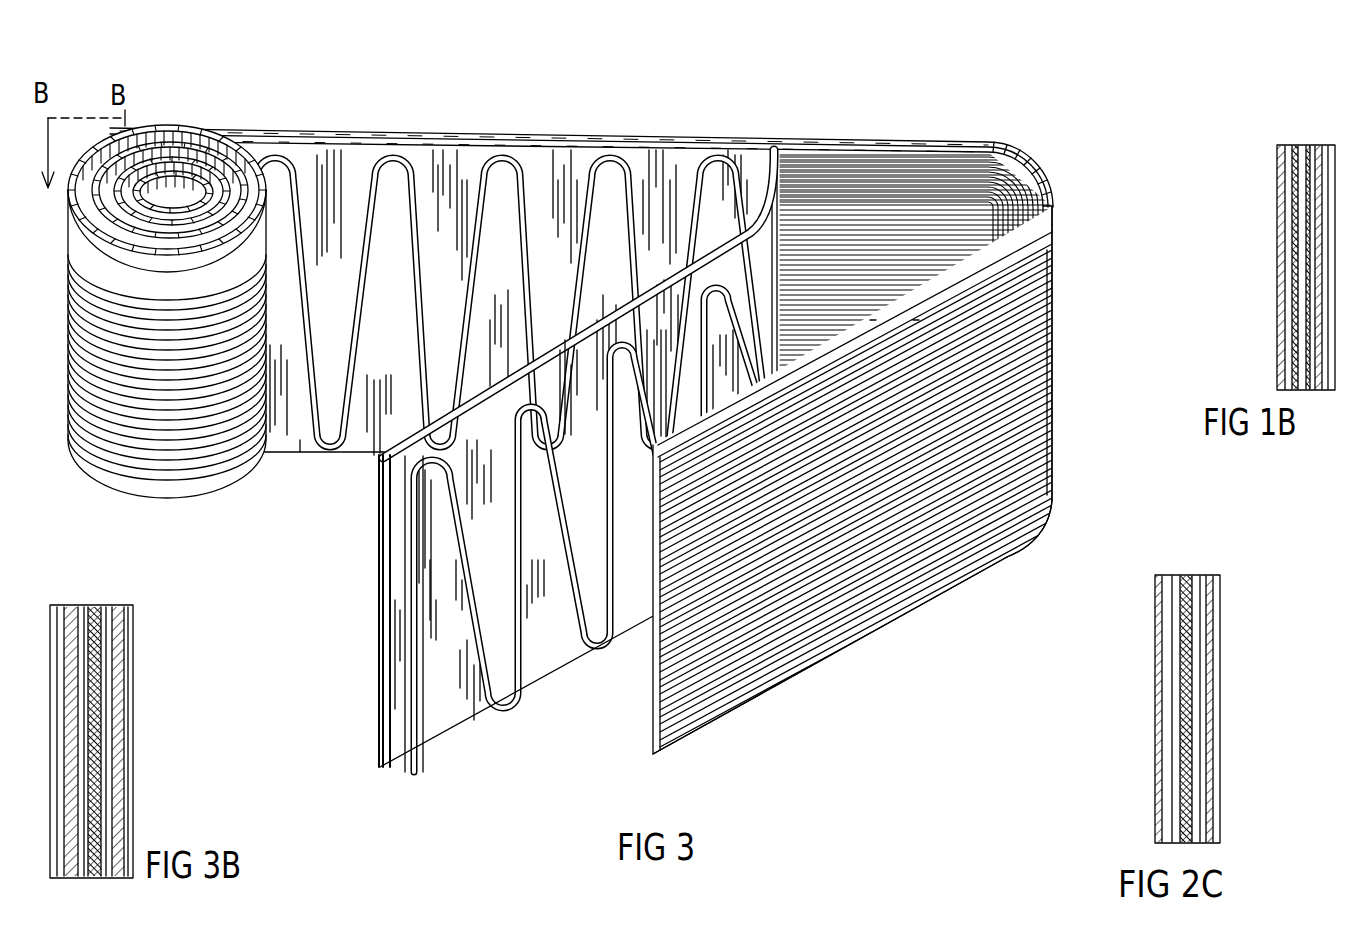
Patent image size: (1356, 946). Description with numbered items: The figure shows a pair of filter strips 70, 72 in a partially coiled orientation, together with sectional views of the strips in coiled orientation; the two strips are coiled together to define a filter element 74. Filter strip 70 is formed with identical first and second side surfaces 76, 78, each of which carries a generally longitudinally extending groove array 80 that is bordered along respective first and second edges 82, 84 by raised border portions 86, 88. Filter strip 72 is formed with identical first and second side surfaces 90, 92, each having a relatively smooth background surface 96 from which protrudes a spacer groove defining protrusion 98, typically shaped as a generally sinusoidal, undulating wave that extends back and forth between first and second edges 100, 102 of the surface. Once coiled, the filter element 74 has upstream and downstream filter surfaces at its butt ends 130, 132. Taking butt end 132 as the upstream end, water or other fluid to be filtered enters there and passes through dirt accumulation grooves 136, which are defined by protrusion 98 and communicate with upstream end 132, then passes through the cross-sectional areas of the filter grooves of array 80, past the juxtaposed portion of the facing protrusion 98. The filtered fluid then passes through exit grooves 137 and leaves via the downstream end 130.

The filter strip 70 is at (730, 712).
The filter strip 72 is at (374, 752).
The filter element 74 is at (193, 187).
The first side surface 76 is at (822, 193).
The second side surface 78 is at (1058, 350).
The groove array 80 is at (852, 252).
The first edge 82 is at (872, 330).
The second edge 84 is at (840, 660).
The raised border portion 86 is at (913, 330).
The raised border portion 88 is at (913, 612).
The first side surface 90 is at (565, 660).
The second side surface 92 is at (450, 177).
The background surface 96 is at (286, 457).
The spacer groove defining protrusion 98 is at (343, 457).
The first edge 100 is at (381, 462).
The second edge 102 is at (376, 752).
The butt end 130 is at (153, 500).
The butt end 132 is at (125, 190).
The dirt accumulation grooves 136 is at (352, 167).
The exit grooves 137 is at (503, 257).